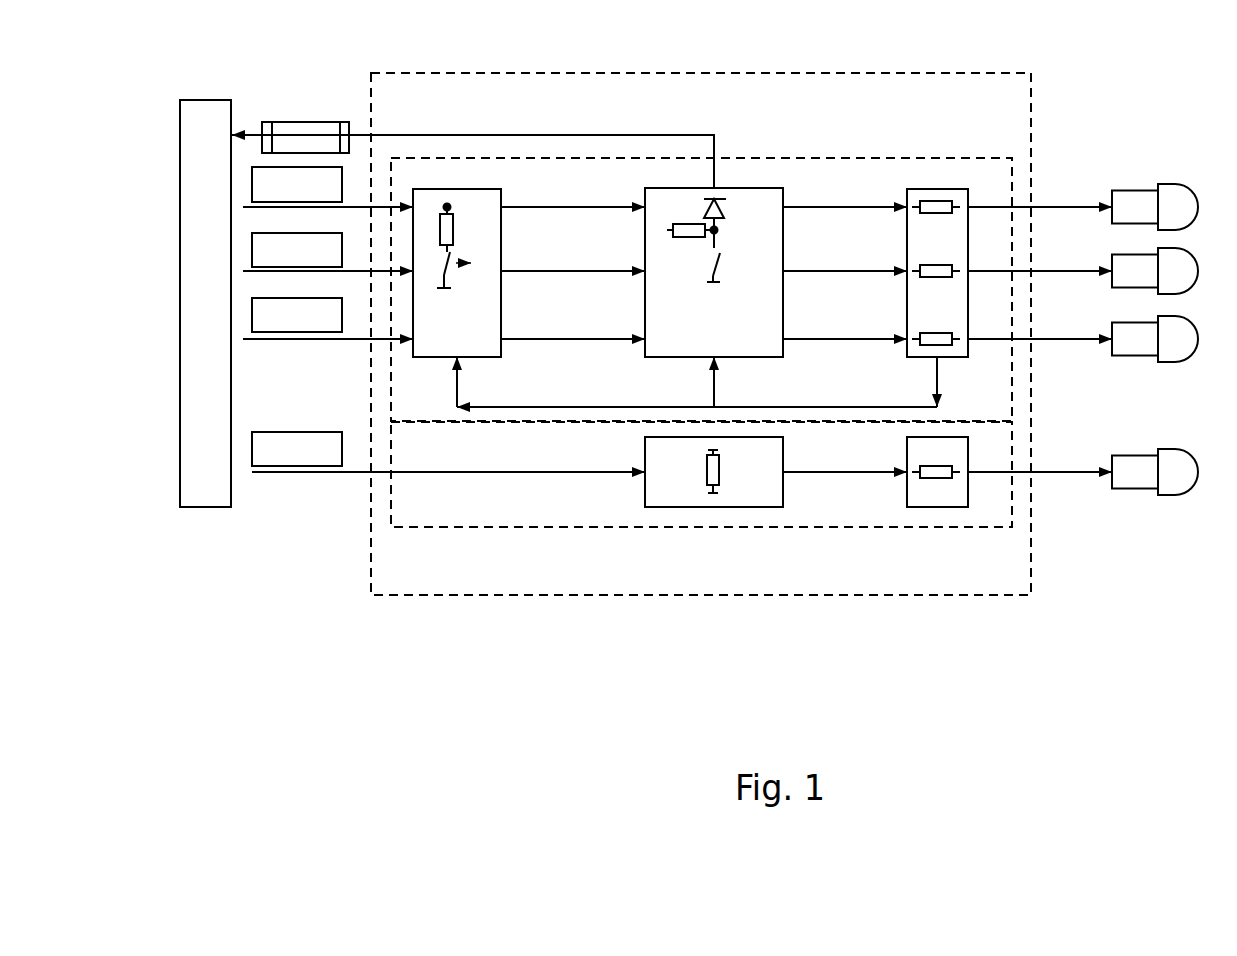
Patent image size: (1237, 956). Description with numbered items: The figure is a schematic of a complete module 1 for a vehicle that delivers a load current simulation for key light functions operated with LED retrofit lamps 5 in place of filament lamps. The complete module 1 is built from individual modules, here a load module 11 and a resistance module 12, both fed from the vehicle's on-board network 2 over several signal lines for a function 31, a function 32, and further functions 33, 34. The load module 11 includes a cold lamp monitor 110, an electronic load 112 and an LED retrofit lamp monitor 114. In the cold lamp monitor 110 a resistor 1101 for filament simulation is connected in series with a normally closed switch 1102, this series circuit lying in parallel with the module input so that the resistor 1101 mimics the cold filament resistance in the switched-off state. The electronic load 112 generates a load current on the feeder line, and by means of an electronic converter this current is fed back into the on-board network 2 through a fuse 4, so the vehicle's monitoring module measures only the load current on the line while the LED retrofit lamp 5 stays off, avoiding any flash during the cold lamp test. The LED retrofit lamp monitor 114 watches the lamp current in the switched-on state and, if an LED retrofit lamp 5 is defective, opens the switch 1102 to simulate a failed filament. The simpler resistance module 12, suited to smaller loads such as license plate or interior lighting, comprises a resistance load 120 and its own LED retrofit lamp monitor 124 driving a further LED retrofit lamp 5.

The complete module 1 is at (1003, 115).
The on-board network 2 is at (214, 495).
The fuse 4 is at (302, 122).
The LED retrofit lamp 5 is at (1179, 208).
The load module 11 is at (991, 403).
The resistance module 12 is at (435, 512).
The function 31 is at (312, 197).
The function 32 is at (312, 263).
The third control signal input 33 is at (312, 328).
The fourth control signal input 34 is at (312, 462).
The cold lamp monitor 110 is at (529, 298).
The resistor 1101 is at (448, 222).
The switch 1102 is at (457, 280).
The electronic load 112 is at (734, 333).
The LED retrofit lamp monitor 114 is at (907, 307).
The resistance load 120 is at (773, 499).
The LED retrofit lamp monitor 124 is at (958, 502).